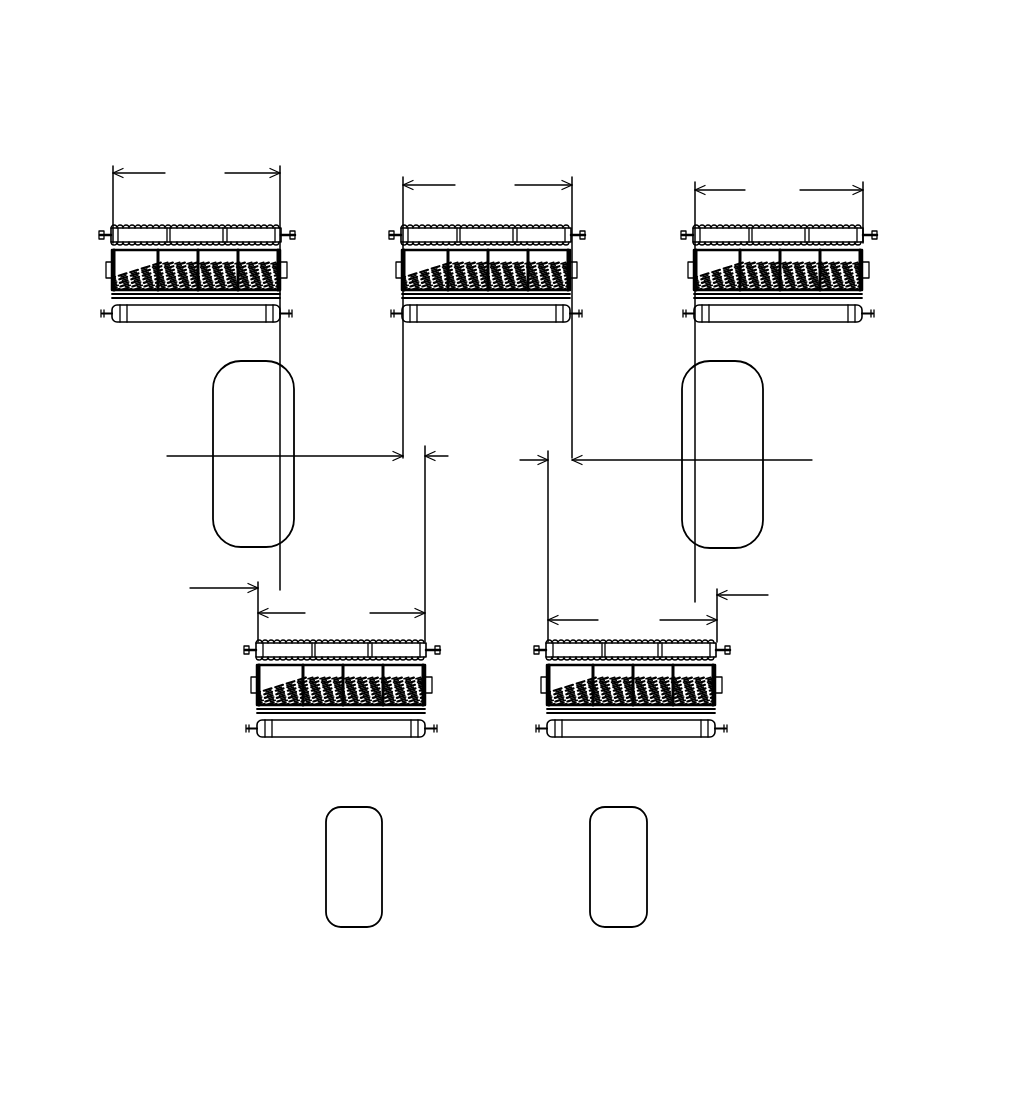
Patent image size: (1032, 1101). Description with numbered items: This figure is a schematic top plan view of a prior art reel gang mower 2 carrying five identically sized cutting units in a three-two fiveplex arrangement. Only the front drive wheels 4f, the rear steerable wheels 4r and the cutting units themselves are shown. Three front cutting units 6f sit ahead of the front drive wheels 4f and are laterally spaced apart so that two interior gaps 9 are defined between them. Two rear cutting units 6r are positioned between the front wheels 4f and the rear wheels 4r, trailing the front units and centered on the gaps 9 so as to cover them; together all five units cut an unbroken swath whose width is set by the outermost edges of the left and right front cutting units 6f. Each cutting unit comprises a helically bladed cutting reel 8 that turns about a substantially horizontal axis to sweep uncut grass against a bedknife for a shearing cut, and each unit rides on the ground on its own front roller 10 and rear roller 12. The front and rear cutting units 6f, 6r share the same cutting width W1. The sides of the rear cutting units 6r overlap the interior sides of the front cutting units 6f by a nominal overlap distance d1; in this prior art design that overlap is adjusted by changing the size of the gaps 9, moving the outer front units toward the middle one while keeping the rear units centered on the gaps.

The reel gang mower 2 is at (441, 95).
The front drive wheels 4f is at (213, 414).
The rear steerable wheels 4r is at (326, 866).
The front cutting units 6f is at (92, 254).
The rear cutting units 6r is at (238, 690).
The cutting reel 8 is at (286, 284).
The uncut strip / gap between front units 9 is at (348, 233).
The front roller 10 is at (130, 227).
The rear roller 12 is at (156, 324).
The cutting width W1 is at (488, 397).
The overlap distance d1 is at (190, 458).